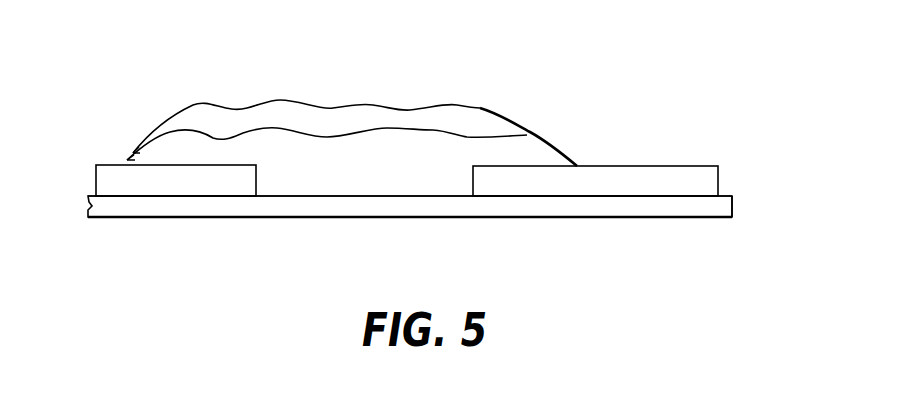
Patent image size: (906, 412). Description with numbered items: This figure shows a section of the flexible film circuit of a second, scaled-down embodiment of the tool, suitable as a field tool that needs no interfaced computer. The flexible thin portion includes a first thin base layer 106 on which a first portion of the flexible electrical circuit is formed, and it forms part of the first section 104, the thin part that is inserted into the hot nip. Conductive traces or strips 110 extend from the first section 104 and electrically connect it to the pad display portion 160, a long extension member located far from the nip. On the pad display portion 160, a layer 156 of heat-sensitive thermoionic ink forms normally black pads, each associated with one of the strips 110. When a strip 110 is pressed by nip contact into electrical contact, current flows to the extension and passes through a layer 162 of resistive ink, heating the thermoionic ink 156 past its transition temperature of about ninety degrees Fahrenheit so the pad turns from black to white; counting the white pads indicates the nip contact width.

The first section 104 is at (88, 202).
The first thin base layer 106 is at (600, 205).
The conductive strips 110 is at (107, 165).
The layer of thermoionic ink 156 is at (398, 115).
The pad display portion 160 is at (730, 196).
The layer of resistive ink 162 is at (332, 175).